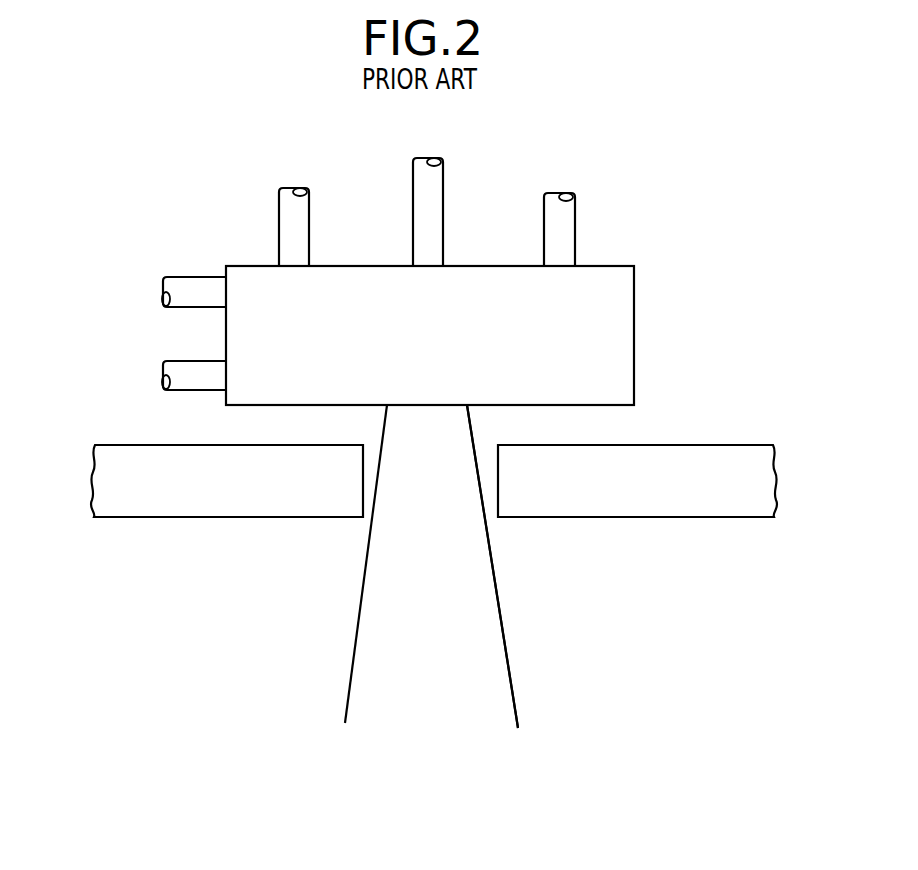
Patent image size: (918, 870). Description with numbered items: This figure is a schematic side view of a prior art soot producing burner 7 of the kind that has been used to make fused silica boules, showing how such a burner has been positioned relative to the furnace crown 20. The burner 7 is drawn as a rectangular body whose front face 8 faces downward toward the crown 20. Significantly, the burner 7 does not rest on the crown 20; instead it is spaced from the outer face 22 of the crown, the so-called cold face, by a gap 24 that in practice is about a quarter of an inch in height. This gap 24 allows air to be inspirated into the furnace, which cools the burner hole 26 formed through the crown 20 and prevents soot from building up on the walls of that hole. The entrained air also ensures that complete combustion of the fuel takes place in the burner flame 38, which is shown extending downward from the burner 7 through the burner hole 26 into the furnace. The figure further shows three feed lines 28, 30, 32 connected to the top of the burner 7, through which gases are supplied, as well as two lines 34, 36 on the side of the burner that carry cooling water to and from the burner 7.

The soot producing burner 7 is at (670, 350).
The front face 8 is at (560, 405).
The furnace crown 20 is at (697, 504).
The outer face of the crown 22 is at (730, 445).
The gap 24 is at (232, 418).
The burner hole 26 is at (490, 513).
The feed line 28 is at (302, 217).
The feed line 30 is at (428, 207).
The feed line 32 is at (563, 230).
The cooling water line 34 is at (193, 295).
The cooling water line 36 is at (193, 373).
The burner flame 38 is at (434, 632).